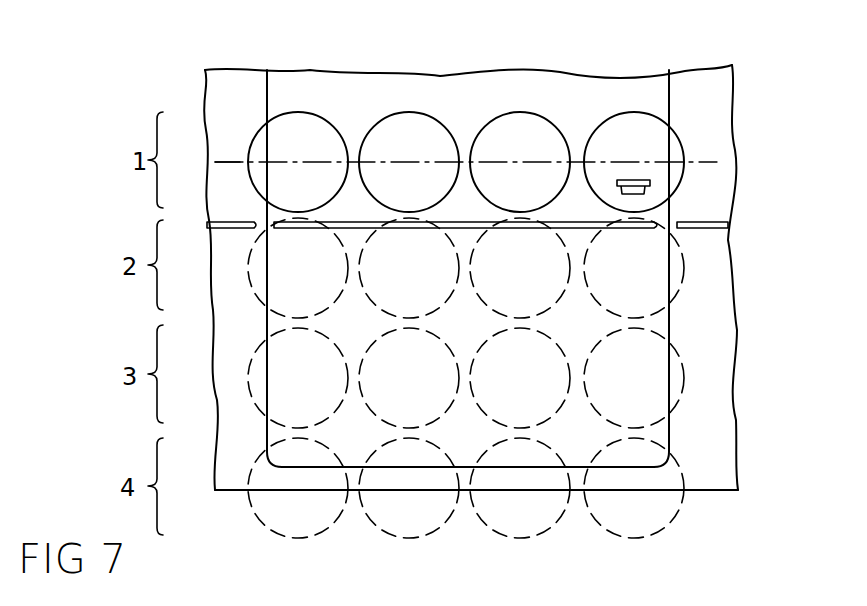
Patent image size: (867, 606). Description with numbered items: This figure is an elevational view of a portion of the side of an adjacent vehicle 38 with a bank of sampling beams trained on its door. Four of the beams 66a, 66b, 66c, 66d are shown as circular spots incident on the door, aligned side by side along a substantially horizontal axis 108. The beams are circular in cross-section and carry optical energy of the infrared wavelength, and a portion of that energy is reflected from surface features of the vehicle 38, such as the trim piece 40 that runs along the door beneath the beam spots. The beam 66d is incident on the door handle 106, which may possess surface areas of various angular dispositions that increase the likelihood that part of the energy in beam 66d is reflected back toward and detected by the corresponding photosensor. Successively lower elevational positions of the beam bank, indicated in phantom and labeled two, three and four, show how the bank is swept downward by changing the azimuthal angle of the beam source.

The adjacent vehicle 38 is at (722, 294).
The trim piece 40 is at (700, 226).
The sampling beam 66a is at (290, 112).
The sampling beam 66b is at (402, 112).
The sampling beam 66c is at (518, 112).
The sampling beam 66d is at (637, 112).
The door handle 106 is at (648, 184).
The horizontal axis 108 is at (228, 162).